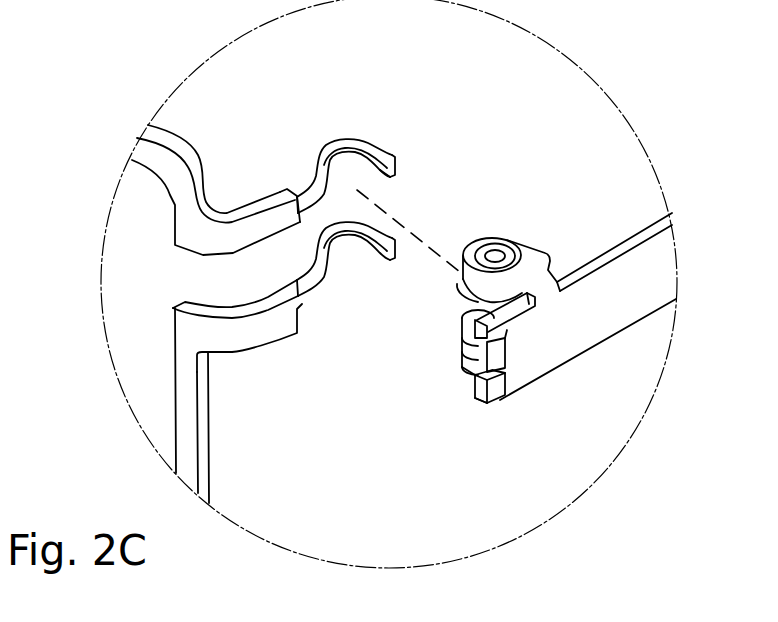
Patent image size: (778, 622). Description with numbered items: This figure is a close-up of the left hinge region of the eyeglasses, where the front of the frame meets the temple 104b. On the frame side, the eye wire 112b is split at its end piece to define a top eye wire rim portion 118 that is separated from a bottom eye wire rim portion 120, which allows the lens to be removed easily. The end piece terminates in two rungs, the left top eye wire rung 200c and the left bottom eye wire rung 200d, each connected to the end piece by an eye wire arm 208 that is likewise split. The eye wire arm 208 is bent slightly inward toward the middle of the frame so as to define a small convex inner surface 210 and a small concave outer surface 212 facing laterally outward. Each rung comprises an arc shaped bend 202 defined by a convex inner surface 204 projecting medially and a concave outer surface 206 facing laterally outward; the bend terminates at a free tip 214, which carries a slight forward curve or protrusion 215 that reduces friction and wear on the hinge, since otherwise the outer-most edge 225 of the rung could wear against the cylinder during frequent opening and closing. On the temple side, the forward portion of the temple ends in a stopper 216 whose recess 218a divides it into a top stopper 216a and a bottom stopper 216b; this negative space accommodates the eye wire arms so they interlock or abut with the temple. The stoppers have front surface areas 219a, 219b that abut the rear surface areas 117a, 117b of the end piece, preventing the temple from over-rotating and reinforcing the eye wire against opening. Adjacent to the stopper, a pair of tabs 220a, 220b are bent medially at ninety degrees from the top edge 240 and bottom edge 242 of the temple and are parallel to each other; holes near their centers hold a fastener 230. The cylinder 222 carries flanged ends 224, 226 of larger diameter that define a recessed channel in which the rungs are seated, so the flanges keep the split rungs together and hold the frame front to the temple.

The temple 104b is at (646, 230).
The eye wire 112b is at (170, 134).
The rear surface area 117a is at (289, 181).
The rear surface area 117b is at (312, 325).
The top eye wire rim portion 118 is at (250, 210).
The bottom eye wire rim portion 120 is at (244, 352).
The left top eye wire rung 200c is at (377, 139).
The left bottom eye wire rung 200d is at (368, 282).
The arc shaped bend 202 is at (343, 139).
The convex inner surface 204 is at (319, 126).
The concave outer surface 206 is at (344, 164).
The eye wire arm 208 is at (313, 165).
The small convex inner surface 210 is at (284, 274).
The small concave outer surface 212 is at (346, 288).
The tip 214 is at (392, 155).
The protrusion 215 is at (384, 172).
The stopper 216 is at (523, 399).
The top stopper 216a is at (505, 341).
The bottom stopper 216b is at (500, 392).
The recess 218a is at (470, 372).
The front surface area 219a is at (471, 333).
The front surface area 219b is at (467, 397).
The tab 220a is at (533, 260).
The tab 220b is at (477, 358).
The cylinder 222 is at (460, 290).
The flanged end 224 is at (496, 255).
The outer-most edge 225 is at (414, 266).
The flanged end 226 is at (464, 347).
The fastener 230 is at (510, 238).
The top edge 240 is at (633, 237).
The bottom edge 242 is at (607, 339).